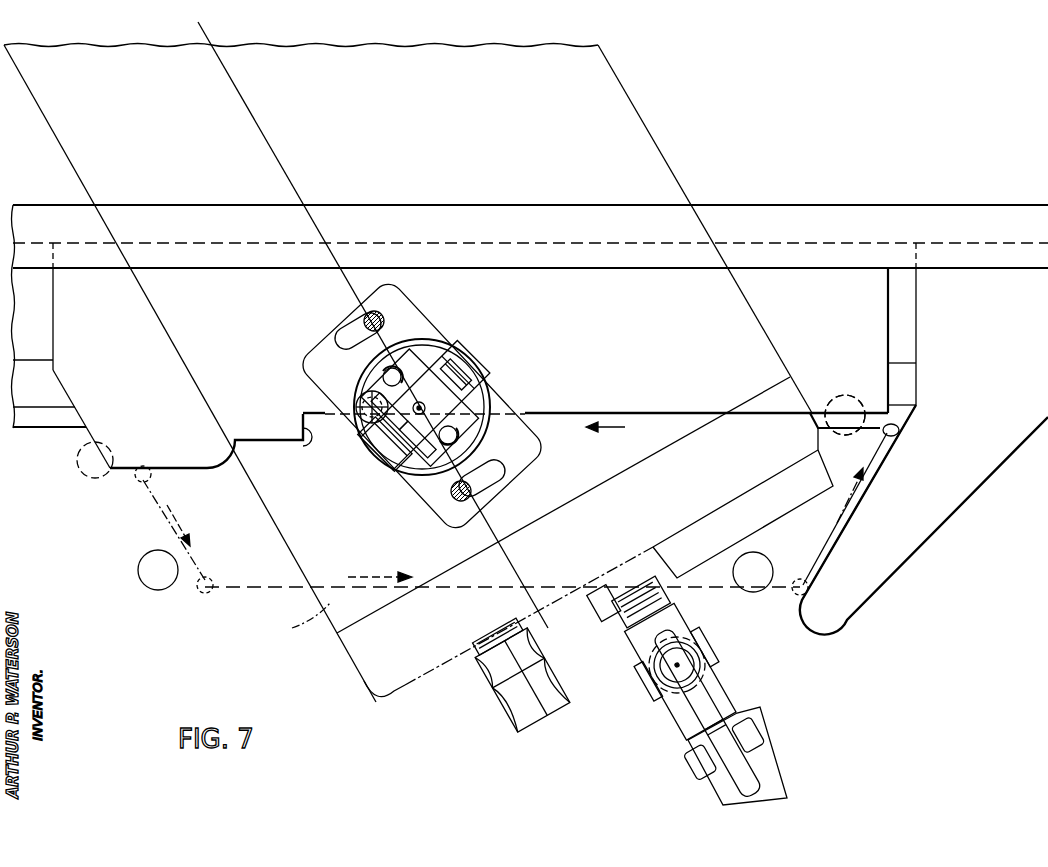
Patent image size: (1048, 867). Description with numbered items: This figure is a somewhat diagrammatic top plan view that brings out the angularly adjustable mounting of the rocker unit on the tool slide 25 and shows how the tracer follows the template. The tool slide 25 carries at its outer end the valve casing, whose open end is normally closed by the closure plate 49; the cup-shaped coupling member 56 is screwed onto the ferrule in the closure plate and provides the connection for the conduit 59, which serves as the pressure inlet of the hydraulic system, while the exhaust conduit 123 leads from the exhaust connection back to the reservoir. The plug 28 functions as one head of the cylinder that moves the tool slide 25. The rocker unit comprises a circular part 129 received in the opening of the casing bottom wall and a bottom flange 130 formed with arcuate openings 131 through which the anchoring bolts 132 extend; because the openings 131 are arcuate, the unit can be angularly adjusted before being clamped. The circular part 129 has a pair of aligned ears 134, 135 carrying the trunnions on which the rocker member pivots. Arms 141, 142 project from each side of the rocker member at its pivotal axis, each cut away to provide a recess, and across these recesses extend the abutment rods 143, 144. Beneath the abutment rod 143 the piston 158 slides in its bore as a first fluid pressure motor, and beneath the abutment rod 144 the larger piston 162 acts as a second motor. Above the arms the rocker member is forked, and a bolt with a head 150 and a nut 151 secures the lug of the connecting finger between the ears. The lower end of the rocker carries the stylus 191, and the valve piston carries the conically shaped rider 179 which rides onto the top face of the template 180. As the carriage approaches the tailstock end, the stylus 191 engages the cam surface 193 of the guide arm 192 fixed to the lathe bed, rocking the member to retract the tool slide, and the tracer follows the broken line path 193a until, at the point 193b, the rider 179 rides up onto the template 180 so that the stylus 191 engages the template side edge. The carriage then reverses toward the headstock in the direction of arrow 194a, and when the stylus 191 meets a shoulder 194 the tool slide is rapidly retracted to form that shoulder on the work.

The tool slide 25 is at (618, 90).
The plug 28 is at (710, 552).
The closure plate 49 is at (405, 690).
The cup-shaped coupling member 56 is at (603, 600).
The conduit 59 is at (750, 730).
The exhaust conduit 123 is at (513, 720).
The circular part 129 is at (490, 398).
The bottom flange 130 is at (435, 327).
The openings 131 is at (345, 340).
The anchoring bolts 132 is at (364, 314).
The ear 134 is at (460, 360).
The ear 135 is at (372, 445).
The arm 141 is at (415, 355).
The arm 142 is at (420, 470).
The abutment rod 143 is at (457, 435).
The abutment rod 144 is at (392, 368).
The head 150 is at (395, 455).
The nut 151 is at (465, 376).
The piston 158 is at (457, 444).
The piston 162 is at (383, 377).
The conically shaped rider 179 is at (356, 400).
The template 180 is at (790, 295).
The stylus 191 is at (420, 416).
The guide arm 192 is at (963, 485).
The cam surface 193 is at (842, 532).
The broken line path 193a is at (866, 425).
The point 193b is at (900, 431).
The shoulder 194 is at (303, 446).
The arrow 194a is at (602, 439).